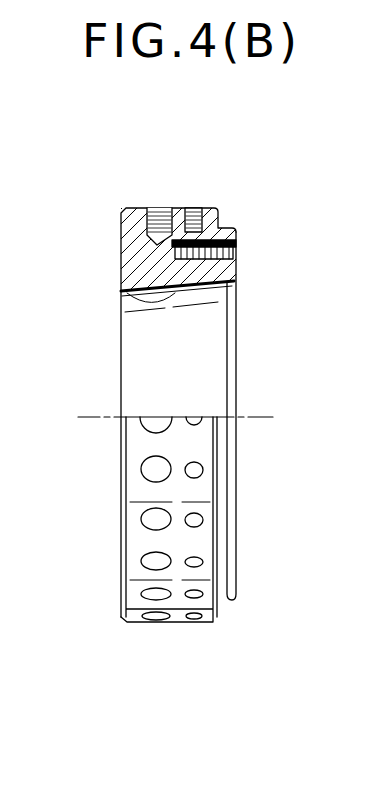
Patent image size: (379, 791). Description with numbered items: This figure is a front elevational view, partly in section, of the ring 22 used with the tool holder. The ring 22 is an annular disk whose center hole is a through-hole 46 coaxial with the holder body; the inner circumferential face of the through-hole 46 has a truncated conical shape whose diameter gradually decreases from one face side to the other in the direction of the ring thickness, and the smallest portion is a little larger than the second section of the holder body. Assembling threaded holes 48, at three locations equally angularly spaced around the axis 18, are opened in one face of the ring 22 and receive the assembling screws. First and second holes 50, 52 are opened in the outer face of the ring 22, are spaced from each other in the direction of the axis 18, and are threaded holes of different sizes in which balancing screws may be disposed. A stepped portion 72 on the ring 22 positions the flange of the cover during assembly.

The axis 18 is at (128, 418).
The ring 22 is at (273, 172).
The through-hole 46 is at (122, 292).
The threaded holes 48 is at (238, 240).
The first holes 50 is at (158, 210).
The second holes 52 is at (197, 210).
The stepped portion 72 is at (232, 224).